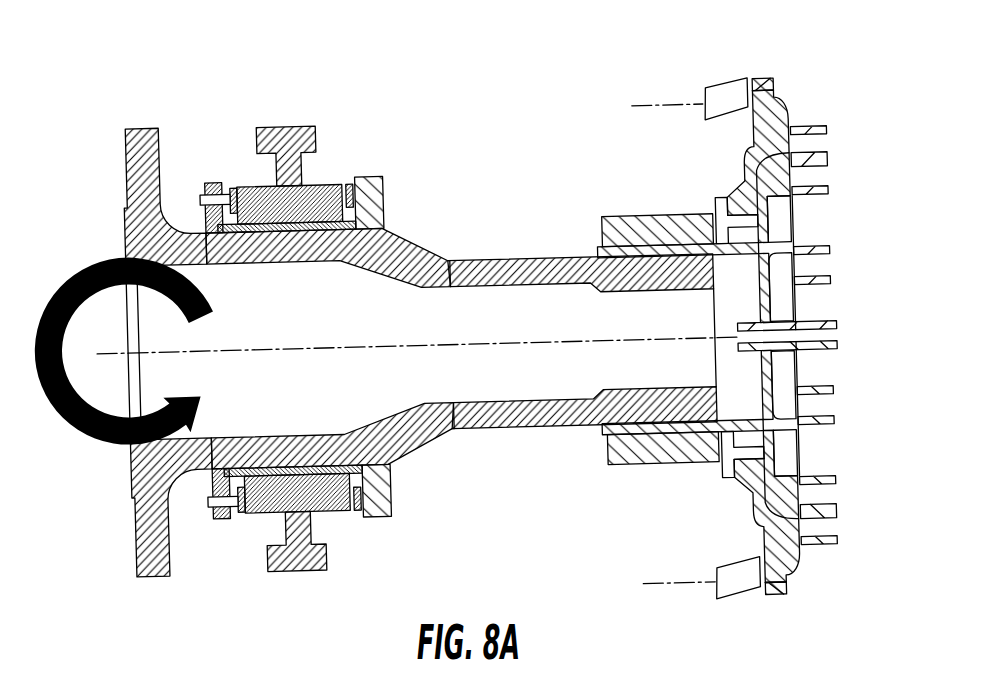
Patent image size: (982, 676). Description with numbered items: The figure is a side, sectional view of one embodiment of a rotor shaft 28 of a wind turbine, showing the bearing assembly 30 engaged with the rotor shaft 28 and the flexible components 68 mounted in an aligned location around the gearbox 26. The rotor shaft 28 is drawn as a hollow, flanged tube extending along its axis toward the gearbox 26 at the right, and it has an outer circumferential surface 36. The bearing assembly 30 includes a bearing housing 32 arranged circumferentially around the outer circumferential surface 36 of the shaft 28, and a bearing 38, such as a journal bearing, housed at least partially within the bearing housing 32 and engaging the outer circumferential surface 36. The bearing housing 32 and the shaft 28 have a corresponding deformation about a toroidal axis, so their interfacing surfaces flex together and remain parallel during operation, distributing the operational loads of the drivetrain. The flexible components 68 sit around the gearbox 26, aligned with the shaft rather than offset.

The gearbox 26 is at (775, 108).
The rotor shaft 28 is at (412, 241).
The bearing assembly 30 is at (86, 92).
The bearing housing 32 is at (264, 126).
The outer circumferential surface 36 is at (490, 255).
The bearing 38 is at (345, 183).
The flexible component 68 is at (719, 82).